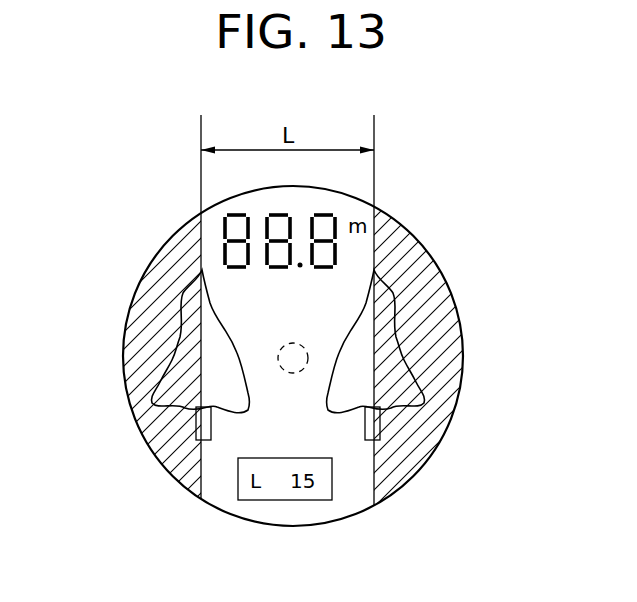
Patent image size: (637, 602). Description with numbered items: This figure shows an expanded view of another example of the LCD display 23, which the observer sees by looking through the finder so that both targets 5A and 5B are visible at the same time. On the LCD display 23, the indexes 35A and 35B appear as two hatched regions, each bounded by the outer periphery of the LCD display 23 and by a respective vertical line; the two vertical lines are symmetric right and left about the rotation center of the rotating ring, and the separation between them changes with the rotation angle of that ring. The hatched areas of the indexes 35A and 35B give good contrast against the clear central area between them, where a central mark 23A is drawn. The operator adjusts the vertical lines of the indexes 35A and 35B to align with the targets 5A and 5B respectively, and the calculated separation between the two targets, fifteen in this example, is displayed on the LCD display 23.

The LCD display 23 is at (160, 460).
The center mark 23A is at (300, 372).
The index 35A is at (175, 265).
The index 35B is at (408, 453).
The target 5A is at (182, 337).
The target 5B is at (400, 322).